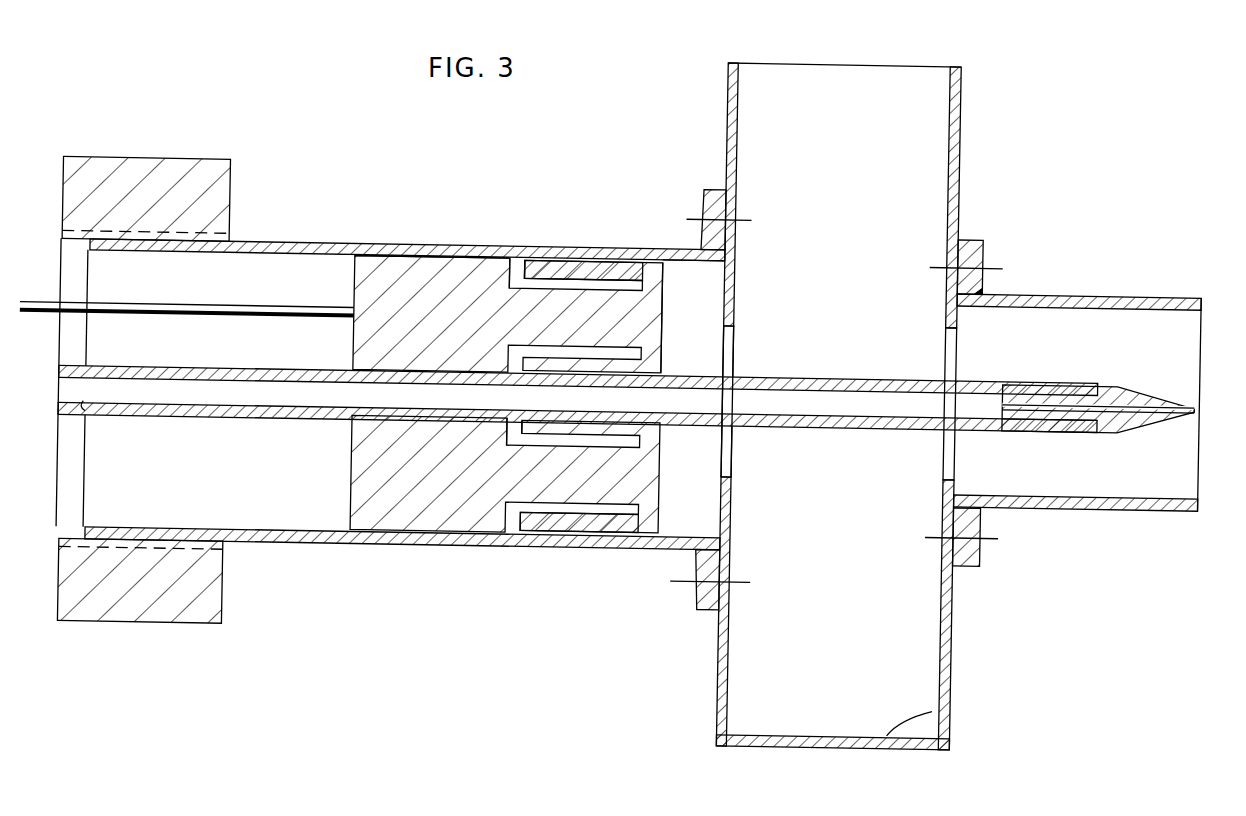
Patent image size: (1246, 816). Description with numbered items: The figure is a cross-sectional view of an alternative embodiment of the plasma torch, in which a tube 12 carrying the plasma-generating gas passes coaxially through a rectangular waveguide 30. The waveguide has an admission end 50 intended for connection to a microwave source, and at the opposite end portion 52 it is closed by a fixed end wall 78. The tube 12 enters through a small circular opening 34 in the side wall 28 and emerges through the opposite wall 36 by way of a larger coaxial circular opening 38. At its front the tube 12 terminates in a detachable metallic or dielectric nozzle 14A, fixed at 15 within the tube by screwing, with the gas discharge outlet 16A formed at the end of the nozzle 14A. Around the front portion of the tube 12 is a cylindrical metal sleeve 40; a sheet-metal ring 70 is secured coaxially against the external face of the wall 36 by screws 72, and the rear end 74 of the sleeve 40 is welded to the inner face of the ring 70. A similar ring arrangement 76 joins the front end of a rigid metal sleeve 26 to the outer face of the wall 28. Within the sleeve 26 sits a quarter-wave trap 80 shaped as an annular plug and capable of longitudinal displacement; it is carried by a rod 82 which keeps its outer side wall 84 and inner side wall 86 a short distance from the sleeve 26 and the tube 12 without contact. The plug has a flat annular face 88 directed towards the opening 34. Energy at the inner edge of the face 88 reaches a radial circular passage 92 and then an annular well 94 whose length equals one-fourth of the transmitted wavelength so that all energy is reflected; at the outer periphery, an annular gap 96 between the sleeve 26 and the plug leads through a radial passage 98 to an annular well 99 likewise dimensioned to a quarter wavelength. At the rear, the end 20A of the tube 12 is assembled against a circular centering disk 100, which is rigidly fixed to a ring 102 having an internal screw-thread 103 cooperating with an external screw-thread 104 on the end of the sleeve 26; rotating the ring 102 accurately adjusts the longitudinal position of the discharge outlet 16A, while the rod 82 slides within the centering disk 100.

The tube 12 is at (303, 378).
The nozzle 14A is at (1119, 426).
The fixing location of the nozzle 15 is at (1058, 380).
The discharge outlet 16A is at (1198, 404).
The rear end of the tube 20A is at (92, 428).
The metal sleeve 26 is at (348, 551).
The side wall of the waveguide 28 is at (722, 672).
The rectangular waveguide 30 is at (889, 614).
The circular opening 34 is at (742, 472).
The wall of the waveguide 36 is at (960, 148).
The circular opening 38 is at (946, 470).
The cylindrical metal sleeve 40 is at (1056, 291).
The admission end 50 is at (990, 90).
The end portion 52 is at (940, 708).
The sheet-metal ring 70 is at (982, 240).
The screws 72 is at (986, 556).
The rear end of the metal sleeve 74 is at (980, 305).
The ring arrangement 76 is at (708, 192).
The fixed end wall 78 is at (912, 752).
The quarter-wave trap 80 is at (395, 290).
The rod 82 is at (265, 314).
The outer side wall of the trap 84 is at (438, 262).
The inner side wall of the trap 86 is at (352, 432).
The flat annular face 88 is at (668, 316).
The circular passage 92 is at (510, 452).
The annular well 94 is at (585, 450).
The annular gap 96 is at (665, 254).
The radial passage 98 is at (518, 275).
The annular well 99 is at (555, 290).
The centering disk 100 is at (74, 515).
The ring 102 is at (108, 180).
The internal screw-thread 103 is at (160, 240).
The external screw-thread 104 is at (172, 552).